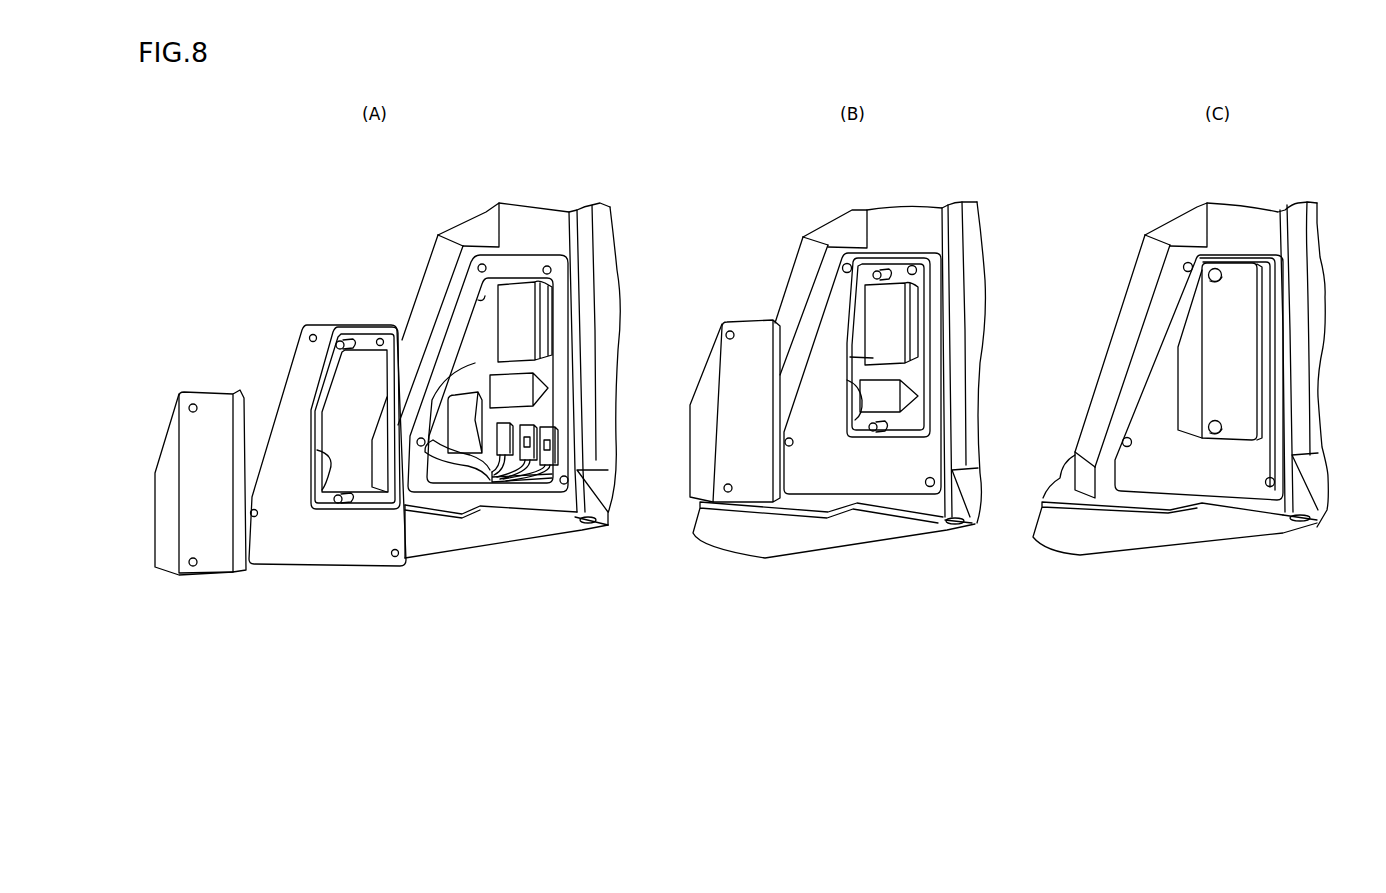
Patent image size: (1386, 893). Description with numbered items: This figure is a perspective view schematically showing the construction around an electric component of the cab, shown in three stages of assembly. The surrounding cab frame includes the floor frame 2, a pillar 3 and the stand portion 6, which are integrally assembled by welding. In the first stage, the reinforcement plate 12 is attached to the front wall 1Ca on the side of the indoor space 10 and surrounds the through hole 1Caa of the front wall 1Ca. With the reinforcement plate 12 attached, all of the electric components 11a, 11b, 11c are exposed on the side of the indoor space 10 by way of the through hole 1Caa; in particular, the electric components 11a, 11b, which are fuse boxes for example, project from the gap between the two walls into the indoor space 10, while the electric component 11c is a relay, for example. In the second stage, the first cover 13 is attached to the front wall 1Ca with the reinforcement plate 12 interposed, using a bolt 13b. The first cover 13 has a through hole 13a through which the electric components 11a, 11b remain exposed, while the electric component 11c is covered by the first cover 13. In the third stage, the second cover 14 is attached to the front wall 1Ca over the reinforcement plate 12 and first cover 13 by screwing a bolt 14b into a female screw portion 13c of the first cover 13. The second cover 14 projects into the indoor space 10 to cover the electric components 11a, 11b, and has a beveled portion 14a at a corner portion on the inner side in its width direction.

The floor frame 2 is at (473, 530).
The pillar 3 is at (587, 250).
The stand portion 6 is at (461, 270).
The indoor space 10 is at (358, 262).
The front wall 1Ca is at (463, 252).
The through hole 1Caa is at (482, 297).
The reinforcement plate 12 is at (462, 316).
The electric component 11a is at (517, 330).
The electric component 11b is at (515, 393).
The electric component 11c is at (535, 480).
The first cover 13 is at (308, 367).
The through hole 13a is at (325, 485).
The bolt 13b is at (843, 262).
The female screw portion 13c is at (340, 342).
The second cover 14 is at (213, 405).
The beveled portion 14a is at (168, 472).
The bolt 14b is at (1211, 268).